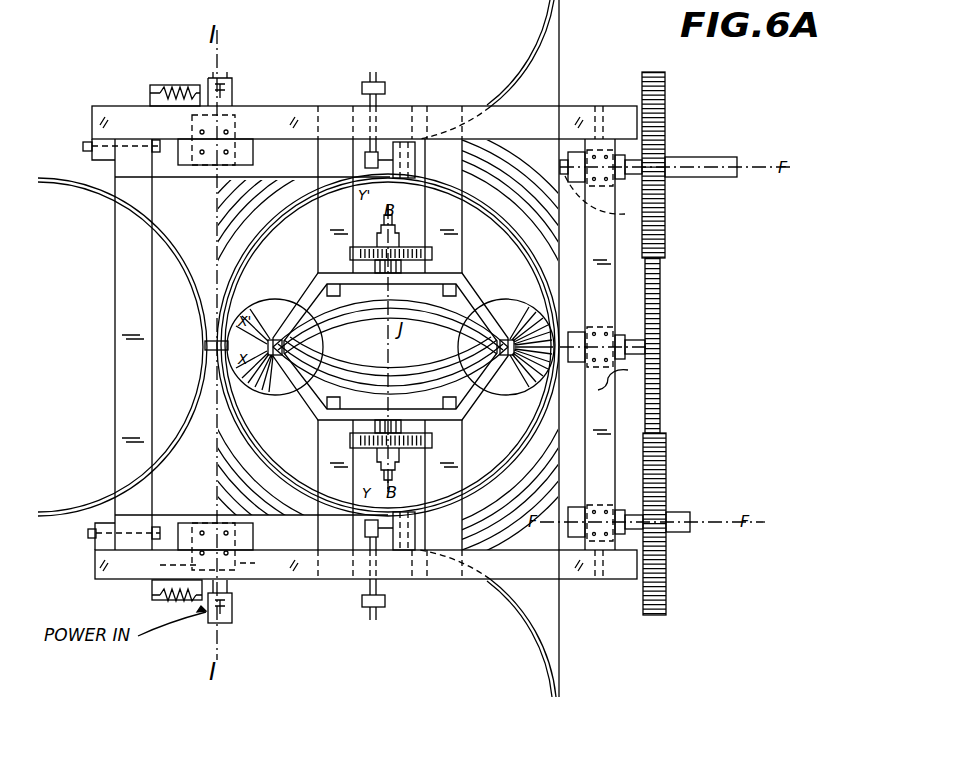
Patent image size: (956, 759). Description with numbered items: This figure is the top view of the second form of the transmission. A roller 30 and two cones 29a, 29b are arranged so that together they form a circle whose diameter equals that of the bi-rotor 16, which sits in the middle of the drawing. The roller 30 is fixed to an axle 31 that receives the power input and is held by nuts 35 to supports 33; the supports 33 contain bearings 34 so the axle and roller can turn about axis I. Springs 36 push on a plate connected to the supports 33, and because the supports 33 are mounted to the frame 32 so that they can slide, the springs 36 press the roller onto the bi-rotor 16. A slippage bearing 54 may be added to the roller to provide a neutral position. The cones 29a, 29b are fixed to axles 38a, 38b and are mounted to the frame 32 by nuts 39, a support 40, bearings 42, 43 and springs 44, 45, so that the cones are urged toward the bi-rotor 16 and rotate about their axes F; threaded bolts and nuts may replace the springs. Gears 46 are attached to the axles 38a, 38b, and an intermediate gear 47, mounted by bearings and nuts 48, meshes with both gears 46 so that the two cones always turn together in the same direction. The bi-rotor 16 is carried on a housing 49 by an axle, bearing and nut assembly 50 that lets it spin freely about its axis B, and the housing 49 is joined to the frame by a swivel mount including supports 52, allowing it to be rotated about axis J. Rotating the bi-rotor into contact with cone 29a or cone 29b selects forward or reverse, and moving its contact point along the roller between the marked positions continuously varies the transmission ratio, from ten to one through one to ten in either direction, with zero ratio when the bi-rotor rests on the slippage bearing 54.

The bi-rotor 16 is at (468, 270).
The cone 29a is at (559, 674).
The cone 29b is at (559, 26).
The roller 30 is at (100, 195).
The axle 31 is at (232, 612).
The frame 32 is at (92, 110).
The supports 33 is at (253, 160).
The bearings 34 is at (235, 130).
The nuts 35 is at (195, 565).
The springs 36 is at (180, 86).
The axle 38a is at (686, 512).
The axle 38b is at (716, 177).
The nuts 39 is at (638, 148).
The support 40 is at (365, 163).
The bearing 42 is at (410, 139).
The bearing 43 is at (664, 226).
The spring 44 is at (596, 132).
The spring 45 is at (370, 134).
The gears 46 is at (665, 92).
The gear 47 is at (660, 340).
The bearings and nuts 48 is at (644, 383).
The housing 49 is at (430, 253).
The axle, bearing, and nut assembly 50 is at (377, 246).
The supports 52 is at (325, 465).
The slippage bearing 54 is at (205, 345).